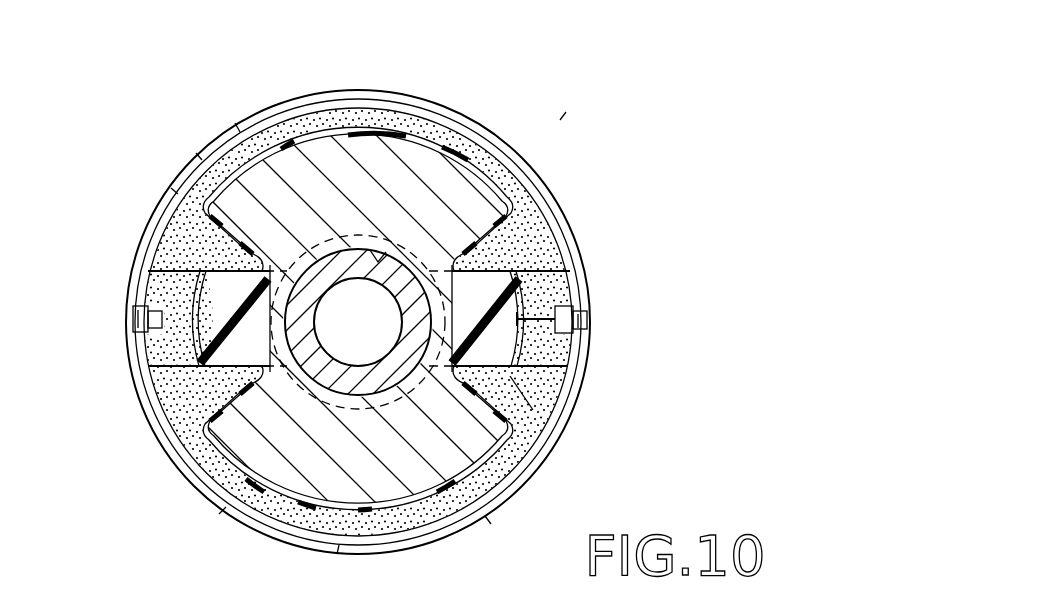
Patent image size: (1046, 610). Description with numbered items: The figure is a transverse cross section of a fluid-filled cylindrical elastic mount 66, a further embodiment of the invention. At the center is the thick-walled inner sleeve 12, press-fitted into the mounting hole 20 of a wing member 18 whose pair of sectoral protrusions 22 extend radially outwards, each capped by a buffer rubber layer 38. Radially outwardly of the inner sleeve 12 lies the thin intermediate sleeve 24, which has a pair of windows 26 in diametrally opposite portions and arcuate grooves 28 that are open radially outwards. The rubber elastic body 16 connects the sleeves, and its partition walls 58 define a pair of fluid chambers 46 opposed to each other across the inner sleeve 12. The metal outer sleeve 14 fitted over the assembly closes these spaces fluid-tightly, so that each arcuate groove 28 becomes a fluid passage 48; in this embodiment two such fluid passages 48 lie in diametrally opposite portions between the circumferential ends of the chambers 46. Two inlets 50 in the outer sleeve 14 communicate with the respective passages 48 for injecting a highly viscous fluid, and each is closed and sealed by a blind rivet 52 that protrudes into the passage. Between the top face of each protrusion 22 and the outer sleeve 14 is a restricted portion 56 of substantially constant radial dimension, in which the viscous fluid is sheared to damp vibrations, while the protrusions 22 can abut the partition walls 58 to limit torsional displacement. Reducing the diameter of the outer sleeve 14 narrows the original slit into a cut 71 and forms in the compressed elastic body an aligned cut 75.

The inner sleeve 12 is at (351, 305).
The outer sleeve 14 is at (571, 262).
The elastic body 16 is at (508, 373).
The wing member 18 is at (280, 495).
The mounting hole 20 is at (373, 256).
The sectoral protrusions 22 is at (350, 158).
The intermediate sleeve 24 is at (195, 366).
The windows 26 is at (198, 268).
The arcuate groove 28 is at (235, 290).
The buffer rubber layer 38 is at (318, 128).
The fluid chambers 46 is at (543, 245).
The fluid passage 48 is at (190, 340).
The inlet 50 is at (130, 320).
The blind rivet 52 is at (162, 350).
The restricted portion 56 is at (385, 110).
The partition walls 58 is at (200, 250).
The cylindrical elastic mount 66 is at (504, 52).
The cut 71 is at (566, 243).
The cut 75 is at (580, 275).